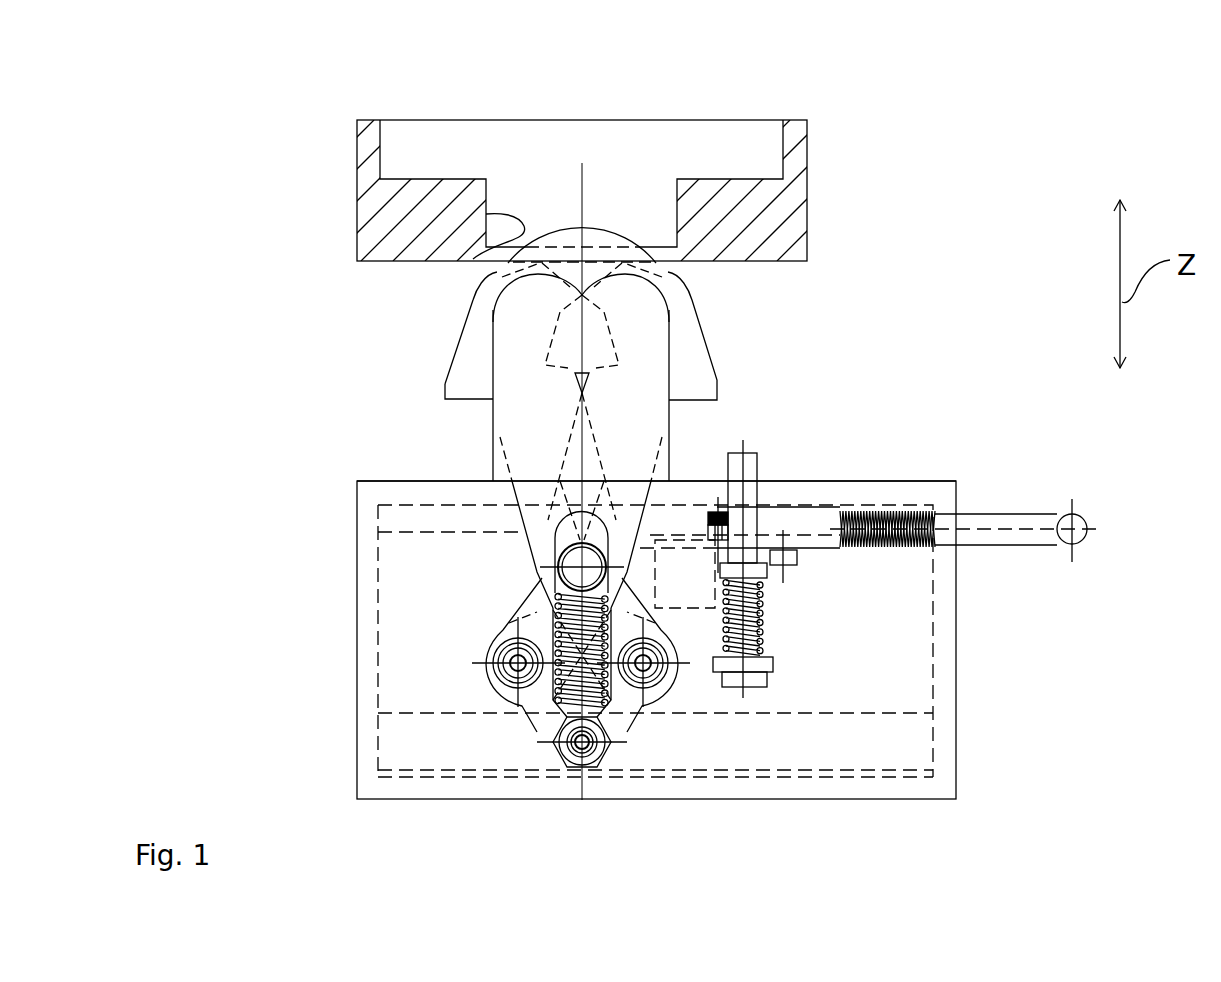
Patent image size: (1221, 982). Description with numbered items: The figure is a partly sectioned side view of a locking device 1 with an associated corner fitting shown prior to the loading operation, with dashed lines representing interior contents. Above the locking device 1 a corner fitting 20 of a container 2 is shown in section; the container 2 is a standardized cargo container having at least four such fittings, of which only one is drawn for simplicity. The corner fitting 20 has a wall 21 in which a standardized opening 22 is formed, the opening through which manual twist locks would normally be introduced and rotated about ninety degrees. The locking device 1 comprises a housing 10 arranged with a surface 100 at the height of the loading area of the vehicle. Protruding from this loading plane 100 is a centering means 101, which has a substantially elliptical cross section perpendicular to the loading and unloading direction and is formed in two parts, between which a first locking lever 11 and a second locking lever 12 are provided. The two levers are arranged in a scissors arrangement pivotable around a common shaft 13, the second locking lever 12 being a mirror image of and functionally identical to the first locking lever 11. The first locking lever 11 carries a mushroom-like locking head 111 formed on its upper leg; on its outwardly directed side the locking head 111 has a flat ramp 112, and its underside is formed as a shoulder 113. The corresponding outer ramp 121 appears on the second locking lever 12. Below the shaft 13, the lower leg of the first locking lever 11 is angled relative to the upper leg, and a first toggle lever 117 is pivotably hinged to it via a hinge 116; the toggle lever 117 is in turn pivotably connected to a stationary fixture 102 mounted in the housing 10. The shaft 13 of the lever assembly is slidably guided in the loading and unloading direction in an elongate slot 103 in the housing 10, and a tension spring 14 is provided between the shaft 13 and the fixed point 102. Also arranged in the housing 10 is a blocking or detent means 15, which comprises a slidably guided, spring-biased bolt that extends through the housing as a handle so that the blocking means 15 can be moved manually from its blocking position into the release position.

The locking device 1 is at (290, 472).
The container 2 is at (300, 162).
The housing 10 is at (948, 652).
The first locking lever 11 is at (429, 502).
The second locking lever 12 is at (710, 502).
The shaft 13 is at (572, 573).
The tension spring 14 is at (570, 678).
The blocking means 15 is at (784, 494).
The corner fitting 20 is at (634, 212).
The wall 21 is at (728, 220).
The opening 22 is at (473, 259).
The surface 100 is at (926, 481).
The centering means 101 is at (598, 235).
The stationary fixture 102 is at (560, 757).
The elongate slot 103 is at (568, 526).
The locking head 111 is at (483, 345).
The flat ramp 112 is at (453, 365).
The shoulder 113 is at (470, 399).
The hinge 116 is at (653, 668).
The first toggle lever 117 is at (625, 725).
The flat ramp of second locking lever 121 is at (683, 347).